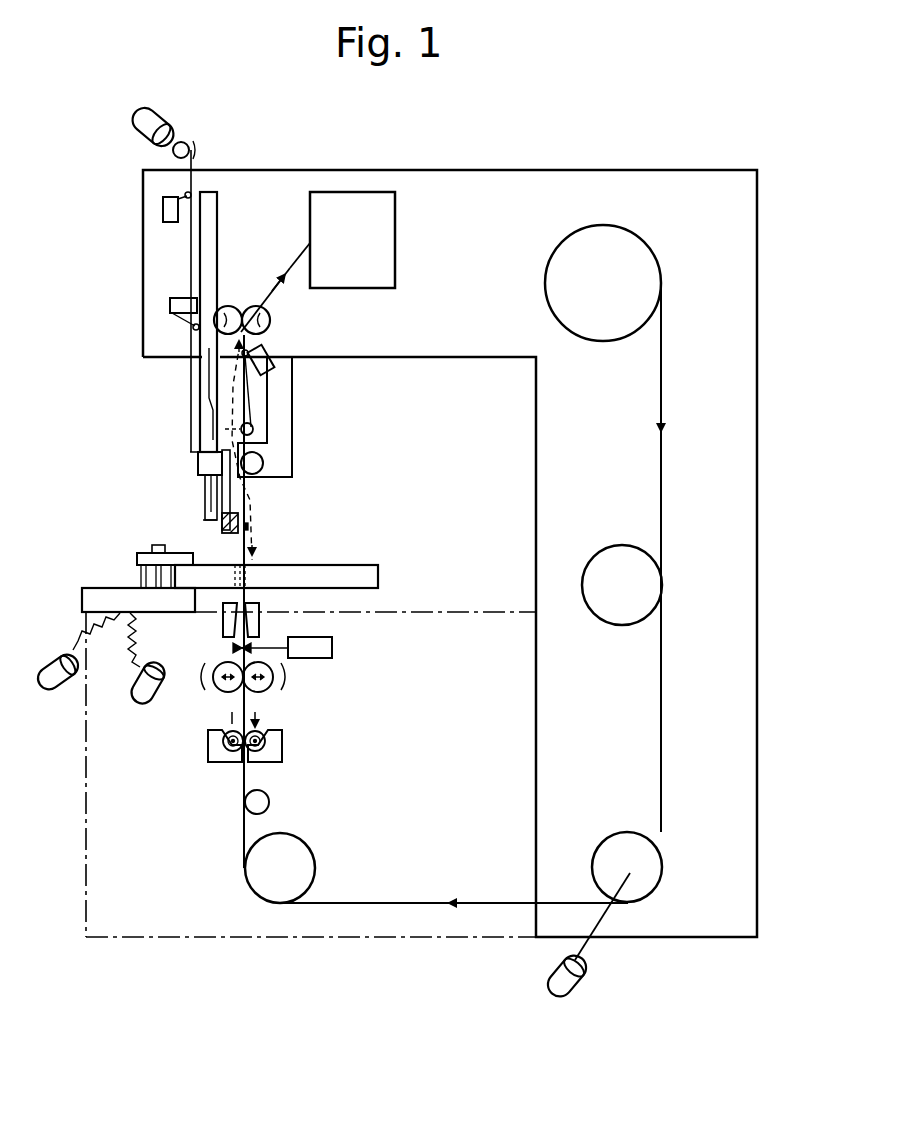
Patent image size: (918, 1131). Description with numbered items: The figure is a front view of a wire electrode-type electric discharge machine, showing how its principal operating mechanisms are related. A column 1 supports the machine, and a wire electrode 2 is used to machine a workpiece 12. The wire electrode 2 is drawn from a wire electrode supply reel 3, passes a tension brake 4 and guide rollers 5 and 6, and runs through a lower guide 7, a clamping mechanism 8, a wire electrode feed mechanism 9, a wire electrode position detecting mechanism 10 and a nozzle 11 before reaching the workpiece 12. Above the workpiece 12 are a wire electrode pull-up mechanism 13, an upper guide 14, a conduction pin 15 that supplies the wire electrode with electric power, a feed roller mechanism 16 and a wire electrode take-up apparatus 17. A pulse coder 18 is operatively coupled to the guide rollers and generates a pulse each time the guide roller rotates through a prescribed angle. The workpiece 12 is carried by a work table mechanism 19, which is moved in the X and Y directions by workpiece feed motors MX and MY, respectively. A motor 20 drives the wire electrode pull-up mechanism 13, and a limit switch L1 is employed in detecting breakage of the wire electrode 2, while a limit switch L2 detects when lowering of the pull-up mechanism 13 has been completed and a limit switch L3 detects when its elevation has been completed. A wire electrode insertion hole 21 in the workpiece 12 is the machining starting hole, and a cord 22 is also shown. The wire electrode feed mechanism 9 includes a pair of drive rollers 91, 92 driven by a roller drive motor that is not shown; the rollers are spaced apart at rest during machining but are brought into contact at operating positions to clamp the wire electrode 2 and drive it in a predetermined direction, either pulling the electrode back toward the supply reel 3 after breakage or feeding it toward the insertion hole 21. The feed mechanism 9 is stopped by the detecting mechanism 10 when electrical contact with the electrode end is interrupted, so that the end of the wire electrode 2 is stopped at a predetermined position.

The column 1 is at (693, 923).
The wire electrode 2 is at (665, 485).
The wire electrode supply reel 3 is at (600, 306).
The tension brake 4 is at (618, 613).
The guide roller 5 is at (627, 842).
The guide roller 6 is at (315, 872).
The lower guide 7 is at (269, 802).
The clamping mechanism 8 is at (282, 750).
The wire electrode feed mechanism 9 is at (265, 707).
The drive roller 91 is at (225, 692).
The drive roller 92 is at (264, 690).
The wire electrode position detecting mechanism 10 is at (332, 648).
The nozzle 11 is at (259, 620).
The workpiece 12 is at (347, 573).
The wire electrode pull-up mechanism 13 is at (206, 527).
The upper guide 14 is at (258, 465).
The conduction pin 15 is at (253, 429).
The feed roller mechanism 16 is at (270, 323).
The wire electrode take-up apparatus 17 is at (362, 283).
The pulse coder 18 is at (570, 993).
The work table mechanism 19 is at (123, 588).
The motor 20 is at (163, 123).
The wire electrode insertion hole 21 is at (248, 582).
The cord 22 is at (200, 283).
The limit switch L1 is at (272, 352).
The limit switch L2 is at (165, 220).
The limit switch L3 is at (170, 312).
The workpiece feed motor MX is at (55, 686).
The workpiece feed motor MY is at (148, 698).